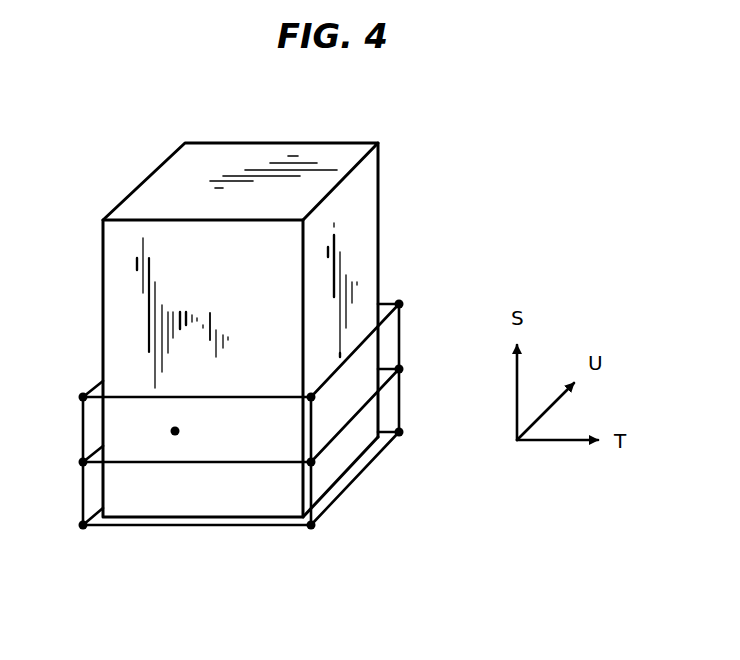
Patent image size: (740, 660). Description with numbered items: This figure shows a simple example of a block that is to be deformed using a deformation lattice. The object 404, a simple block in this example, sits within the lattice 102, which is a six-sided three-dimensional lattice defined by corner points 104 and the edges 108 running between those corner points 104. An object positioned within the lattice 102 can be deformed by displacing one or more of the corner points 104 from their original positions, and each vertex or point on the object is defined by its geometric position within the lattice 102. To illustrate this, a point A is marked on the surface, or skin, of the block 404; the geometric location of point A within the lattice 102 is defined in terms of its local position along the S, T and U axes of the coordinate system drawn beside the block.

The object 404 is at (362, 195).
The corner points 104 is at (399, 304).
The edges 108 is at (402, 393).
The lattice 102 is at (393, 478).
The point A is at (175, 431).